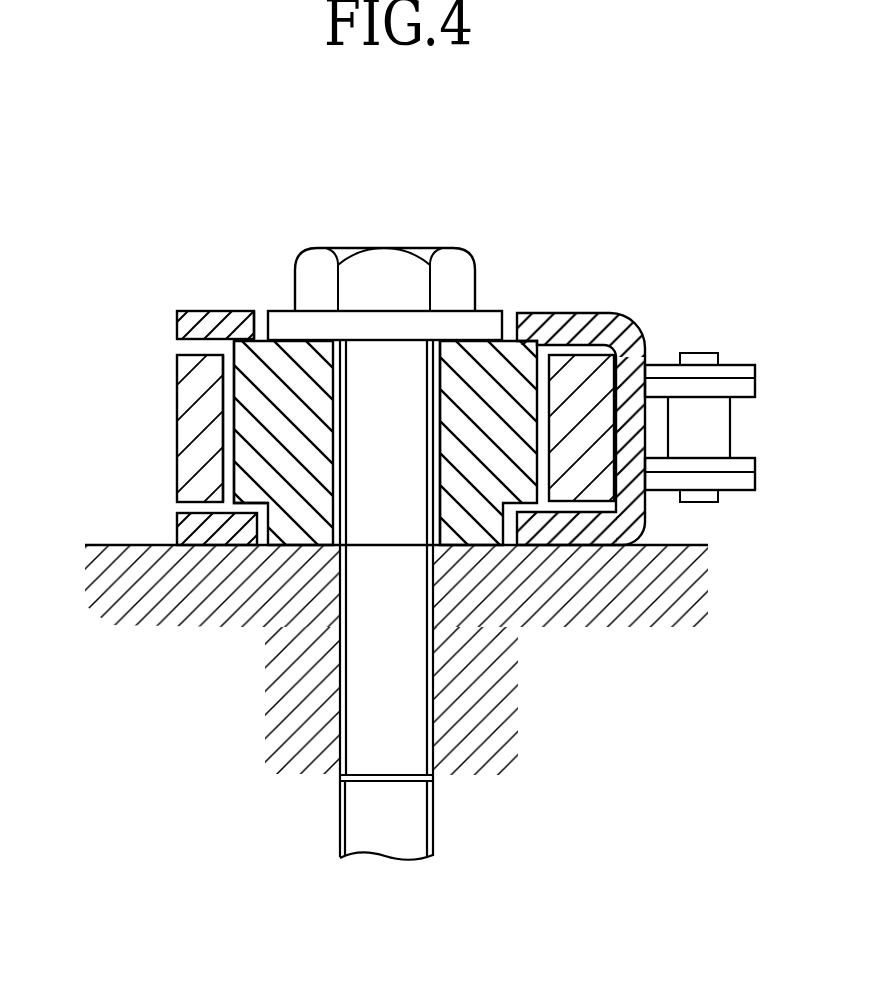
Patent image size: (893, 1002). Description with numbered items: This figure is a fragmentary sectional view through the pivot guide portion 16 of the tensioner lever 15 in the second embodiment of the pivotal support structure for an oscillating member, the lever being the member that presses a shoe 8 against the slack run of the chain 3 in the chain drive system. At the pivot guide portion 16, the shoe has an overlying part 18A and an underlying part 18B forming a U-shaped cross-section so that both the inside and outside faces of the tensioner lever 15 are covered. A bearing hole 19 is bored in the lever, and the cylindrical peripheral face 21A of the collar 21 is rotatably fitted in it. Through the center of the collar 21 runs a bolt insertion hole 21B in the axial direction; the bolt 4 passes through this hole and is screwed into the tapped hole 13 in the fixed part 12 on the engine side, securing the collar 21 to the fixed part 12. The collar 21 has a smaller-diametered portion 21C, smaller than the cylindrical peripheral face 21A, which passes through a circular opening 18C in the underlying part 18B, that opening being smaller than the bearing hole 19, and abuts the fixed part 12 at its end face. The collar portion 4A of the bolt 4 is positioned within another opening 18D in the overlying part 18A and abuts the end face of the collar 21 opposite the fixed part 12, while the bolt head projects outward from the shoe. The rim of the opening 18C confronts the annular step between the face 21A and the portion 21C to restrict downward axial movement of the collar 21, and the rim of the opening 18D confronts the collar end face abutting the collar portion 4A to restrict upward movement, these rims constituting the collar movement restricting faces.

The chain 3 is at (723, 440).
The bolt 4 is at (425, 239).
The collar portion 4A is at (493, 322).
The shoe 8 is at (558, 392).
The fixed part 12 is at (657, 547).
The tapped hole 13 is at (433, 810).
The tensioner lever 15 is at (192, 395).
The pivot guide portion 16 is at (158, 428).
The overlying part 18A is at (178, 339).
The underlying part 18B is at (193, 512).
The circular opening 18C is at (233, 524).
The opening 18D is at (260, 313).
The bearing hole 19 is at (228, 430).
The collar 21 is at (292, 524).
The cylindrical peripheral face 21A is at (615, 317).
The bolt insertion hole 21B is at (426, 514).
The smaller-diametered portion 21C is at (500, 515).